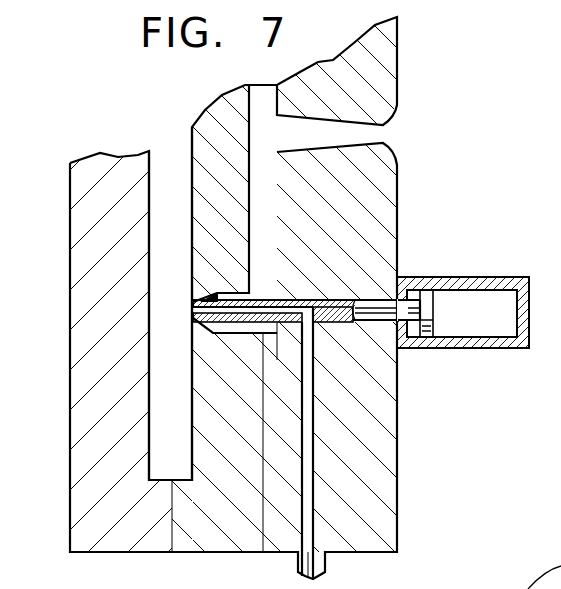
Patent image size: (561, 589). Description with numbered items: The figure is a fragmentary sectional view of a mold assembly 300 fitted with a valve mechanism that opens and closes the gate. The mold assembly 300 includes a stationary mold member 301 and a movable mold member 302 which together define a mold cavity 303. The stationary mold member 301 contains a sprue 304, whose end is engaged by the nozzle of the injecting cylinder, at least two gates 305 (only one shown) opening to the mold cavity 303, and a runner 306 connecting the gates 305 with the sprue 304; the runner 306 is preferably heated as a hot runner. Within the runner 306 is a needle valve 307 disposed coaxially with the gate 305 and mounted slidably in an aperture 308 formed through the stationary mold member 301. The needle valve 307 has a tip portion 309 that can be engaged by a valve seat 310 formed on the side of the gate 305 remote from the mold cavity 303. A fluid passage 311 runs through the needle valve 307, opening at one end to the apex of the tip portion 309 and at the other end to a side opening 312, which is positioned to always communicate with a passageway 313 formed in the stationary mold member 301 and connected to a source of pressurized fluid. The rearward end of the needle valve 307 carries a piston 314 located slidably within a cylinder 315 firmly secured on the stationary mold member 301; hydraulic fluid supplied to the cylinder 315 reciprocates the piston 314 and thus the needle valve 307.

The mold assembly 300 is at (64, 487).
The stationary mold member 301 is at (390, 487).
The movable mold member 302 is at (87, 355).
The mold cavity 303 is at (163, 226).
The sprue 304 is at (337, 133).
The gate 305 is at (192, 317).
The runner 306 is at (262, 210).
The needle valve 307 is at (257, 303).
The aperture 308 is at (353, 320).
The tip portion 309 is at (215, 292).
The valve seat 310 is at (192, 327).
The fluid passage 311 is at (233, 313).
The side opening 312 is at (303, 323).
The passageway 313 is at (310, 493).
The piston 314 is at (440, 320).
The cylinder 315 is at (495, 278).